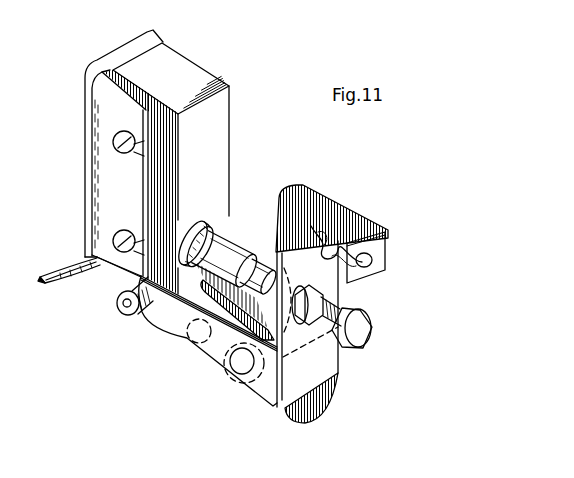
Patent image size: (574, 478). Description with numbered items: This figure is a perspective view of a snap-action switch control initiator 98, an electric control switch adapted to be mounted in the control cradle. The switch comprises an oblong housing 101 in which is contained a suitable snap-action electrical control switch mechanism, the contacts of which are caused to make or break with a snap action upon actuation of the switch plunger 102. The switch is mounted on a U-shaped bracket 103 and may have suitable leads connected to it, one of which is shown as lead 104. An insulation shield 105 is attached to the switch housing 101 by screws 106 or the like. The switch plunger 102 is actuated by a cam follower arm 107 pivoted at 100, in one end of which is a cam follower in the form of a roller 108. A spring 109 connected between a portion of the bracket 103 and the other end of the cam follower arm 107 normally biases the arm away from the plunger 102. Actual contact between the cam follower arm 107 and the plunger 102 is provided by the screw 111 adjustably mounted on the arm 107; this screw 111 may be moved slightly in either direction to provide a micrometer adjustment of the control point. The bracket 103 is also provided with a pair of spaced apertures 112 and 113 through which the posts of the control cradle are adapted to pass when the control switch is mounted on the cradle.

The snap-action switch control initiator 98 is at (233, 72).
The pivot 100 is at (247, 377).
The oblong housing 101 is at (230, 158).
The switch plunger 102 is at (255, 253).
The U-shaped bracket 103 is at (318, 193).
The lead 104 is at (63, 270).
The insulation shield 105 is at (98, 61).
The screws 106 is at (117, 233).
The cam follower arm 107 is at (213, 360).
The roller 108 is at (117, 302).
The spring 109 is at (350, 237).
The screw 111 is at (370, 318).
The aperture 112 is at (278, 392).
The aperture 113 is at (180, 337).